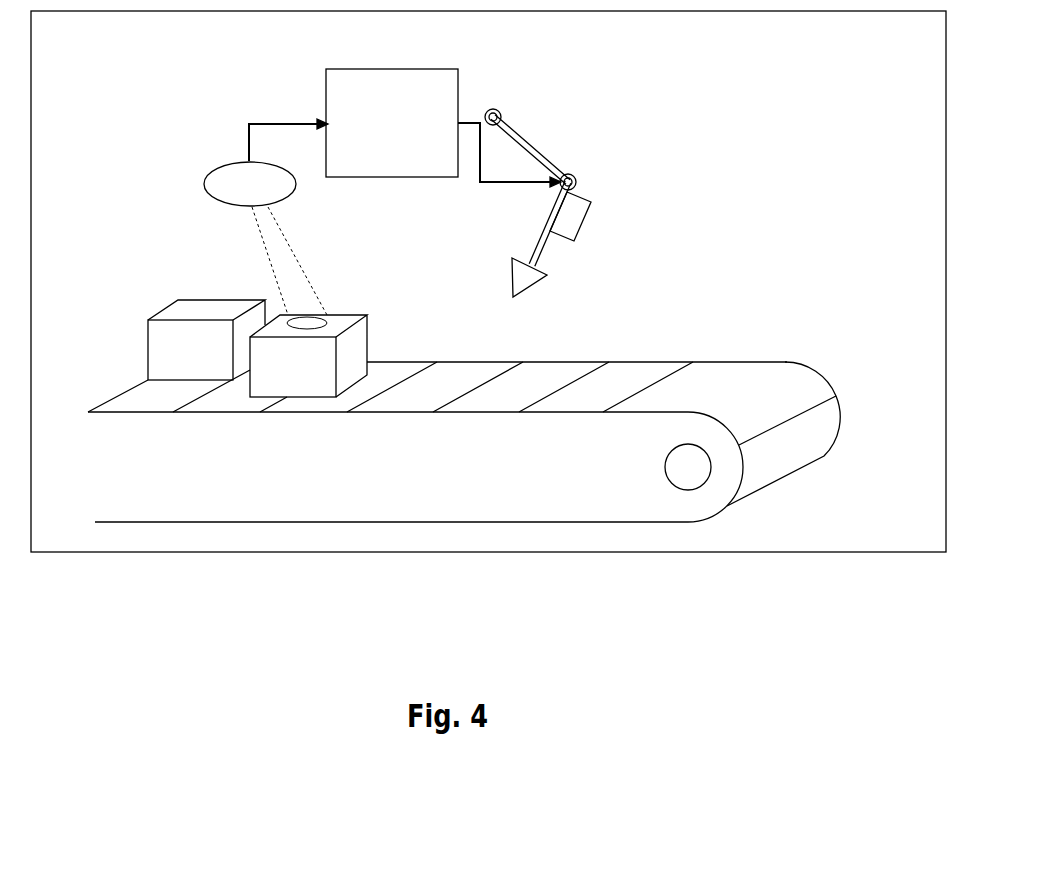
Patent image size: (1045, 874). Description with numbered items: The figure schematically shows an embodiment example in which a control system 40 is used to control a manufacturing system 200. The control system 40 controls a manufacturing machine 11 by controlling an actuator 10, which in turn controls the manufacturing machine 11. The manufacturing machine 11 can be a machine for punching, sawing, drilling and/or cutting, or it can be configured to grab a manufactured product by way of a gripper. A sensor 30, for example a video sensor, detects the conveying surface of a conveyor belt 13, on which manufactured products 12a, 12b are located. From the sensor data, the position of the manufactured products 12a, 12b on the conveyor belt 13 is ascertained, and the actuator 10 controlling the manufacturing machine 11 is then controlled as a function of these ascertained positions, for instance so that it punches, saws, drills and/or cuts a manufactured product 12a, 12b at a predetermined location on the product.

The manufacturing system 200 is at (417, 555).
The control system 40 is at (317, 75).
The sensor 30 is at (204, 183).
The manufacturing machine 11 is at (545, 158).
The actuator 10 is at (590, 215).
The manufactured product 12b is at (162, 312).
The manufactured product 12a is at (370, 340).
The conveyor belt 13 is at (843, 387).